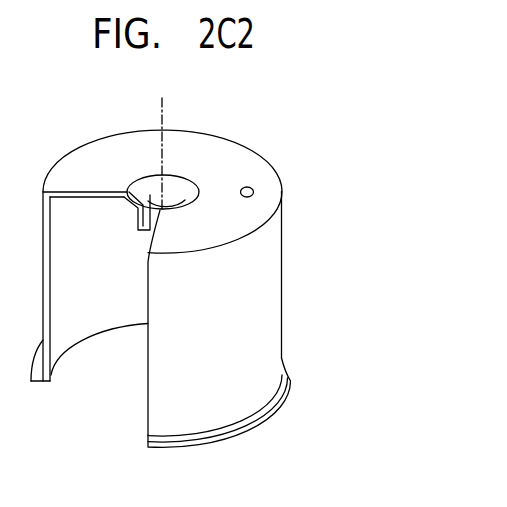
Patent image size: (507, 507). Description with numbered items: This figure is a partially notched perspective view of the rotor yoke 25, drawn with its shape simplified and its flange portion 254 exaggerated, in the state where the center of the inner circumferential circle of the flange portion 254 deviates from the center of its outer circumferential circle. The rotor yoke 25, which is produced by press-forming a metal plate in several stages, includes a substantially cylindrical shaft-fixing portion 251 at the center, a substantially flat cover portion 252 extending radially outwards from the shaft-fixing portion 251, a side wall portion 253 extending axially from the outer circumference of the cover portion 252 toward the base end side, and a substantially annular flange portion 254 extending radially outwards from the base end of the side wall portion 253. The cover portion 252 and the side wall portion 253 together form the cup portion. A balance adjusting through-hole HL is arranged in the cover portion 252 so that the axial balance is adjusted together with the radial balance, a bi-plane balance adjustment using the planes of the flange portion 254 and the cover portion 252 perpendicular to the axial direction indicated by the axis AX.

The rotor yoke 25 is at (389, 214).
The shaft-fixing portion 251 is at (140, 226).
The cover portion 252 is at (235, 163).
The side wall portion 253 is at (284, 278).
The flange portion 254 is at (290, 378).
The balance adjusting through-hole HL is at (254, 187).
The axis AX is at (159, 140).